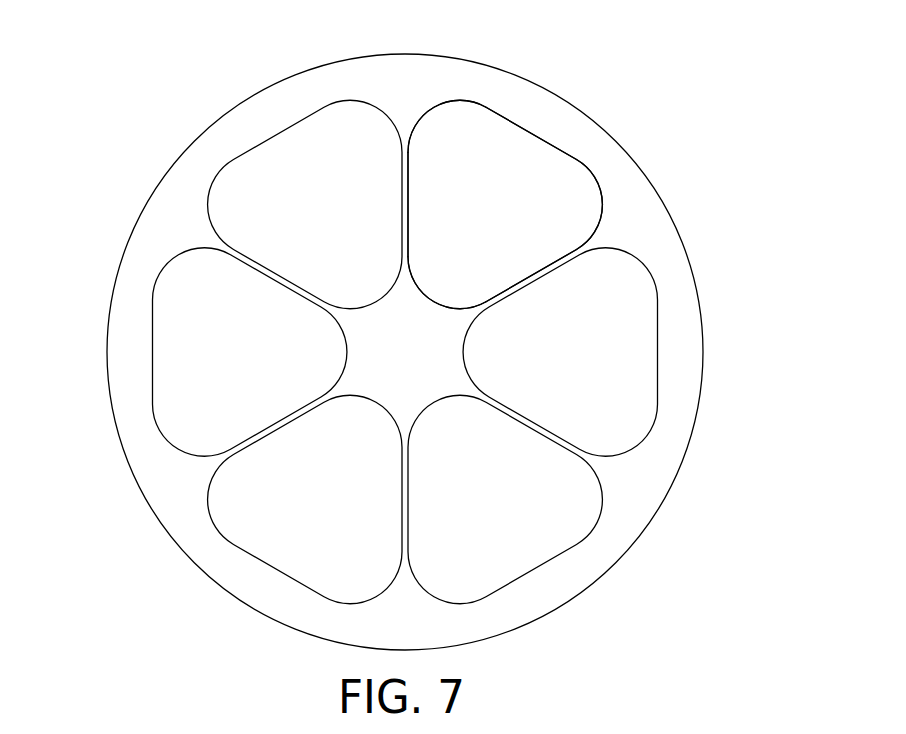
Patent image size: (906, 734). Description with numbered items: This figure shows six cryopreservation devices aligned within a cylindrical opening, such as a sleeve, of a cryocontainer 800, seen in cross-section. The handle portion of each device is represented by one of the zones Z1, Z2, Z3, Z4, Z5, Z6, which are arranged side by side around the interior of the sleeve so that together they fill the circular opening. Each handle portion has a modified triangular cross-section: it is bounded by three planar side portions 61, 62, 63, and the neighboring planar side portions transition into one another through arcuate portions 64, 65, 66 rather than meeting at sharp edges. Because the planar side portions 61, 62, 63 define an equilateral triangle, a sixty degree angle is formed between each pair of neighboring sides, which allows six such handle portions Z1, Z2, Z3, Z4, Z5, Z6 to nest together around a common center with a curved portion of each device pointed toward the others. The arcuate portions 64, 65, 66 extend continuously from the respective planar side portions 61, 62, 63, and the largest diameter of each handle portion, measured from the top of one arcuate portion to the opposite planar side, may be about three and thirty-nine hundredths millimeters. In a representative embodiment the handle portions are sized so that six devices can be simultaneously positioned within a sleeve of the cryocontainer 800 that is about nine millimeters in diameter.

The cryocontainer 800 is at (632, 548).
The handle portion of first device Z1 is at (543, 172).
The handle portion of second device Z2 is at (597, 346).
The handle portion of third device Z3 is at (288, 162).
The handle portion of fourth device Z4 is at (172, 360).
The handle portion of fifth device Z5 is at (272, 548).
The handle portion of sixth device Z6 is at (528, 542).
The planar side portion 61 is at (407, 218).
The planar side portion 62 is at (543, 270).
The planar side portion 63 is at (490, 115).
The arcuate portion 64 is at (437, 302).
The arcuate portion 65 is at (597, 207).
The arcuate portion 66 is at (432, 115).